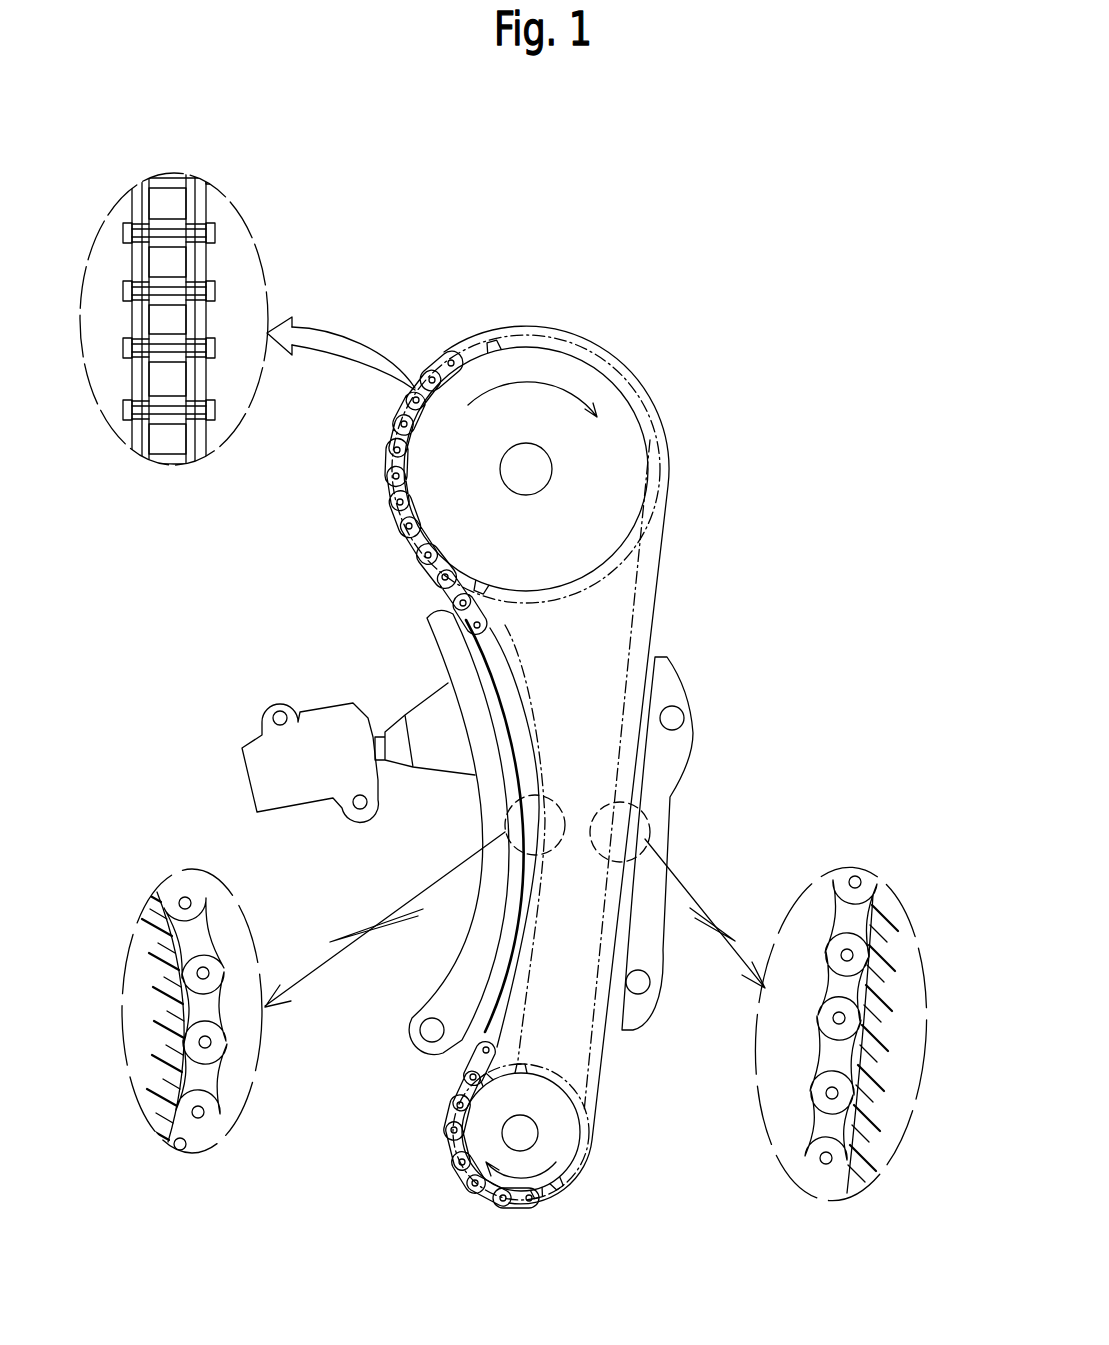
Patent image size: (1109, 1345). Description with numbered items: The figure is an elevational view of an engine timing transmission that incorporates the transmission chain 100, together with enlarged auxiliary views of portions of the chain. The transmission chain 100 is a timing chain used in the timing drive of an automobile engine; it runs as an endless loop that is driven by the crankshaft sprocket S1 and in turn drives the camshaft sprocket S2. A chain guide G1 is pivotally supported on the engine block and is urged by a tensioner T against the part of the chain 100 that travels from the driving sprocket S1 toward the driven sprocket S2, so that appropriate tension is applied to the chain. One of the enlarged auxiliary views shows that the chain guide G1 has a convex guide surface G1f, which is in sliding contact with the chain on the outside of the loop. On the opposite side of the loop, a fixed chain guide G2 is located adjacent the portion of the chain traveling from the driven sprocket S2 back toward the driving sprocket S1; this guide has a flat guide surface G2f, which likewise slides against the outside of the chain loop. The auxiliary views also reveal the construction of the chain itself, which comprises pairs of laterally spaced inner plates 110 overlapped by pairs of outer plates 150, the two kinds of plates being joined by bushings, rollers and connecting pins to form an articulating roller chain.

The transmission chain 100 is at (225, 247).
The inner plates 110 is at (210, 1077).
The outer plates 150 is at (213, 1022).
The crankshaft sprocket S1 is at (560, 1136).
The camshaft sprocket S2 is at (627, 447).
The chain guide G1 is at (490, 802).
The fixed chain guide G2 is at (667, 767).
The convex guide surface G1f is at (180, 1150).
The flat guide surface G2f is at (868, 915).
The tensioner T is at (262, 768).